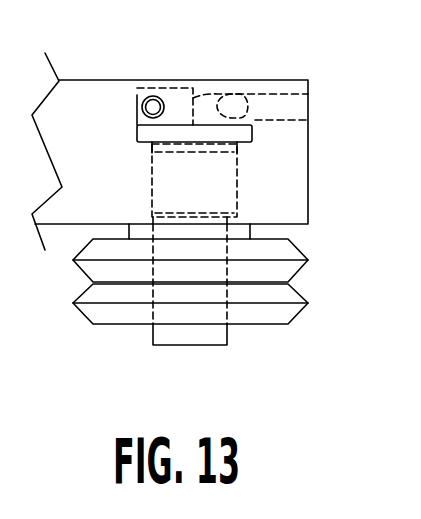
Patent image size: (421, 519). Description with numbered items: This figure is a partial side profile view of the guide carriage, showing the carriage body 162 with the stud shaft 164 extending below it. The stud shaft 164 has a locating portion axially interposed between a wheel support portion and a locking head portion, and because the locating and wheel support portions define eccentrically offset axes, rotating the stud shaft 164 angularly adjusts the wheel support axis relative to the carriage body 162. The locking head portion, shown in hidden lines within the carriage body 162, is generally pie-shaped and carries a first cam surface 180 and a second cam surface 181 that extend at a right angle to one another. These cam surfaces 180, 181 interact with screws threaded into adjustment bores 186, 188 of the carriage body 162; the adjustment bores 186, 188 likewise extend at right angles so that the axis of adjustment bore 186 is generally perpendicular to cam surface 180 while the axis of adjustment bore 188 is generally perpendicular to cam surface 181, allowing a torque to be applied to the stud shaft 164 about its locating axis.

The carriage body 162 is at (290, 168).
The stud shaft 164 is at (218, 346).
The first cam surface 180 is at (176, 103).
The second cam surface 181 is at (225, 87).
The adjustment bore 186 is at (142, 108).
The adjustment bore 188 is at (290, 105).